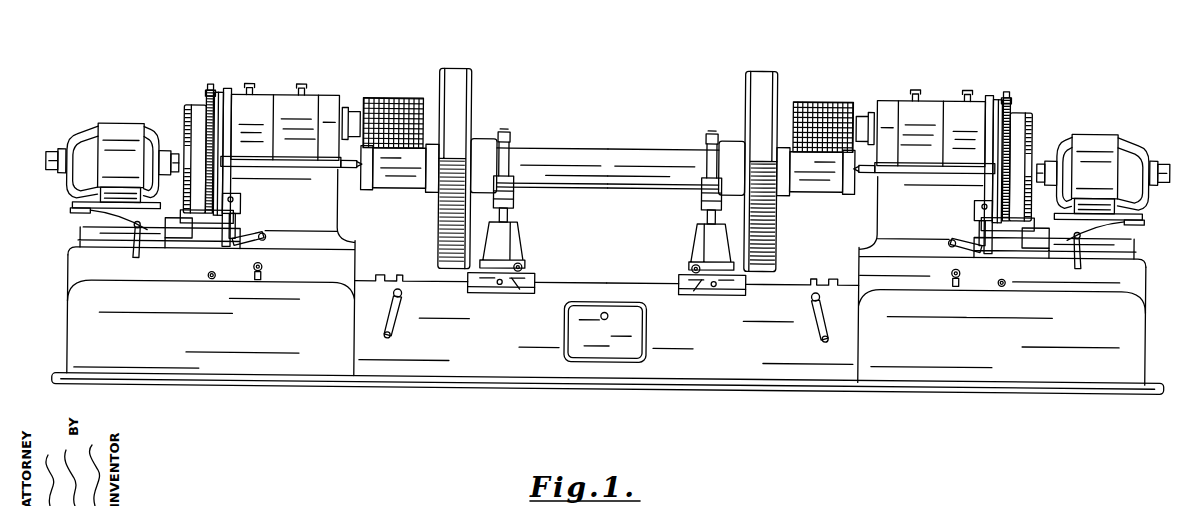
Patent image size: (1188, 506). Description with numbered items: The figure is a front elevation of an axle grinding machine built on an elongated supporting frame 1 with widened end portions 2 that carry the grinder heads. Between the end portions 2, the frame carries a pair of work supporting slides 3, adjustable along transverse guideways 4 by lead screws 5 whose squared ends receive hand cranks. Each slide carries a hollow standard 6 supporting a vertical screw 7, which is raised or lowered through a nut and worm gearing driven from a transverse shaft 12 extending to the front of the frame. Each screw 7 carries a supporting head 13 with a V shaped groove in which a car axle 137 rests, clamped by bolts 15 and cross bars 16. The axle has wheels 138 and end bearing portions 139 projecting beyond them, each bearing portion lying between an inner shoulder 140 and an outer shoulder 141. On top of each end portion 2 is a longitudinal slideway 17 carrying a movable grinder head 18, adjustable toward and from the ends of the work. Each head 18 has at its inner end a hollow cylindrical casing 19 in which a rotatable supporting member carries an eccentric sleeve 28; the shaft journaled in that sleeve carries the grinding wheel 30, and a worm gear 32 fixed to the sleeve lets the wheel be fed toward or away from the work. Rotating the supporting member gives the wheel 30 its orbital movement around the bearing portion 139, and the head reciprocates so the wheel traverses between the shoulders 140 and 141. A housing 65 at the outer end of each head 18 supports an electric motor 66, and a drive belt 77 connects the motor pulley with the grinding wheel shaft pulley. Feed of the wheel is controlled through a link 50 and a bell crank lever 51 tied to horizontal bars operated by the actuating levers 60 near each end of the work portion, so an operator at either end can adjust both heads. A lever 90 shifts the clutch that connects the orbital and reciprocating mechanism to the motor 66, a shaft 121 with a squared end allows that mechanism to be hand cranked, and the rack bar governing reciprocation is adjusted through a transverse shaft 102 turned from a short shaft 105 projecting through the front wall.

The supporting frame 1 is at (748, 378).
The end portions 2 is at (332, 378).
The work supporting slides 3 is at (532, 278).
The guideways 4 is at (513, 292).
The lead screws 5 is at (497, 286).
The hollow standard 6 is at (524, 240).
The vertical screw 7 is at (508, 218).
The transverse shaft 12 is at (522, 265).
The supporting head 13 is at (514, 200).
The bolts 15 is at (512, 160).
The cross bars 16 is at (508, 134).
The slideway 17 is at (1157, 273).
The grinder head 18 is at (185, 246).
The cylindrical casing 19 is at (298, 100).
The sleeve 28 is at (350, 110).
The grinding wheel 30 is at (398, 100).
The worm gear 32 is at (209, 92).
The link 50 is at (234, 220).
The bell crank lever 51 is at (262, 250).
The actuating lever 60 is at (403, 318).
The housing 65 is at (95, 234).
The electric motor 66 is at (116, 128).
The drive belt 77 is at (184, 133).
The actuating lever 90 is at (110, 248).
The transverse shaft 102 is at (259, 283).
The short shaft 105 is at (263, 272).
The shaft 121 is at (212, 283).
The car axle 137 is at (596, 150).
The wheels 138 is at (452, 70).
The end bearing portions 139 is at (404, 208).
The shoulder 140 is at (398, 190).
The shoulder 141 is at (364, 190).